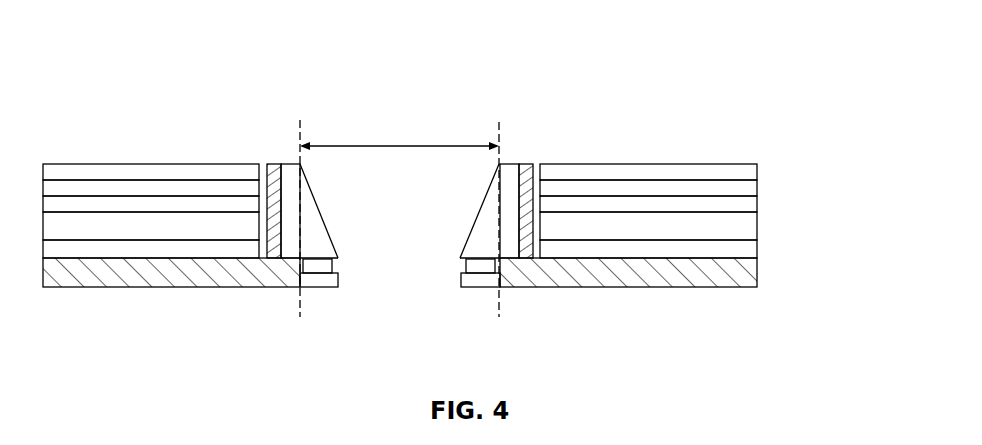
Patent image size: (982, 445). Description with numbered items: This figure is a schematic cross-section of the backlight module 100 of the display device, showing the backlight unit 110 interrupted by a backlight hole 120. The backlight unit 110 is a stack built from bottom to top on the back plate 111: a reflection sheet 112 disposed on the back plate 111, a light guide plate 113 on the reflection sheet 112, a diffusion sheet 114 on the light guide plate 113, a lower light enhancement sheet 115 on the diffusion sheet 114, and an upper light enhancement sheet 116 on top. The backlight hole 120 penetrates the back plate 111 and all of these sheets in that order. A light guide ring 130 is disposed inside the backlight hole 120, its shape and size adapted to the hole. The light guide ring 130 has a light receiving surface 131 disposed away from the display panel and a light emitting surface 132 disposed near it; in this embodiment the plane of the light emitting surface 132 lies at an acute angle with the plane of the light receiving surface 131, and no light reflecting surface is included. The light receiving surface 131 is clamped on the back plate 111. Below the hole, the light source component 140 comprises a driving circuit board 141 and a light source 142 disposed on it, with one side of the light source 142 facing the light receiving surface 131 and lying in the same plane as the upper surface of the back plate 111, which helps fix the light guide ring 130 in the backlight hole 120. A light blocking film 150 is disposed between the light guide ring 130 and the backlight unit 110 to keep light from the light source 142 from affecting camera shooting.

The backlight module 100 is at (123, 131).
The backlight unit 110 is at (828, 158).
The back plate 111 is at (737, 279).
The reflection sheet 112 is at (730, 254).
The light guide plate 113 is at (730, 231).
The diffusion sheet 114 is at (730, 208).
The lower light enhancement sheet 115 is at (730, 189).
The upper light enhancement sheet 116 is at (728, 173).
The backlight hole 120 is at (396, 159).
The light guide ring 130 is at (507, 182).
The light receiving surface 131 is at (340, 262).
The light emitting surface 132 is at (328, 225).
The light source component 140 is at (571, 303).
The driving circuit board 141 is at (469, 277).
The light source 142 is at (485, 263).
The light blocking film 150 is at (267, 252).